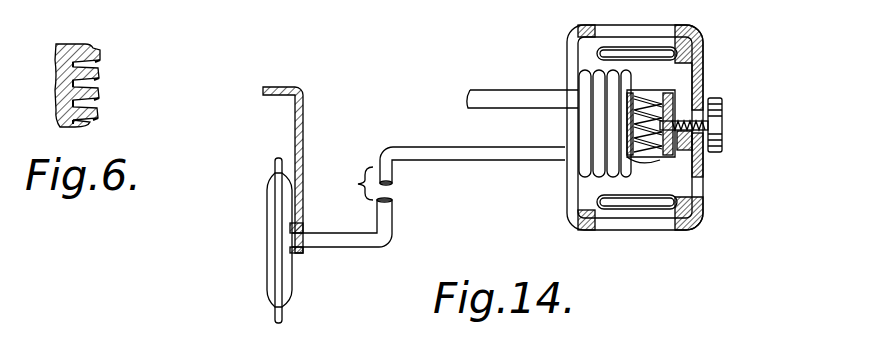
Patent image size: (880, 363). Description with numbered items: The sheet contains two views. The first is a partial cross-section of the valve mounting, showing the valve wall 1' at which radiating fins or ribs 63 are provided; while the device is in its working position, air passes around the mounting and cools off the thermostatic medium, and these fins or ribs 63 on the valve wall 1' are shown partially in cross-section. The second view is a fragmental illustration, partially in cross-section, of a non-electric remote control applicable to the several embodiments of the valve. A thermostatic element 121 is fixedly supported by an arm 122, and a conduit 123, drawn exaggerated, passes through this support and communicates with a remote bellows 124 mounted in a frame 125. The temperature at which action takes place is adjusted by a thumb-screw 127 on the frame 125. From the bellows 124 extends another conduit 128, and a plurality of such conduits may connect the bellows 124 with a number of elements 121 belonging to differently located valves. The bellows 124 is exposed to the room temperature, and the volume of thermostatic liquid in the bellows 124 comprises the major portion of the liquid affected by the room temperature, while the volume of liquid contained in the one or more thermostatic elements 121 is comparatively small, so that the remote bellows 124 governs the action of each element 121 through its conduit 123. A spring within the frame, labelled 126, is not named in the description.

In FIG. 6, the valve wall 1' is at (50, 85).
In FIG. 6, the radiating fins or ribs 63 is at (93, 80).
In FIG. 14, the thermostatic element 121 is at (267, 252).
In FIG. 14, the arm 122 is at (307, 121).
In FIG. 14, the conduit 123 is at (333, 242).
In FIG. 14, the remote bellows 124 is at (612, 118).
In FIG. 14, the frame 125 is at (577, 203).
In FIG. 14, the spring 126 is at (640, 158).
In FIG. 14, the thumb-screw 127 is at (717, 127).
In FIG. 14, the conduit 128 is at (522, 73).